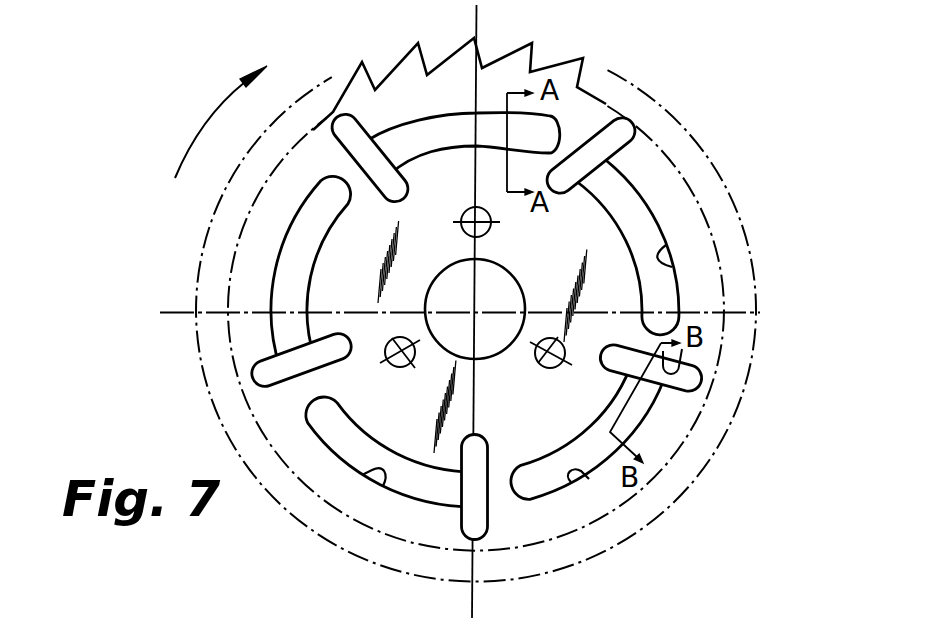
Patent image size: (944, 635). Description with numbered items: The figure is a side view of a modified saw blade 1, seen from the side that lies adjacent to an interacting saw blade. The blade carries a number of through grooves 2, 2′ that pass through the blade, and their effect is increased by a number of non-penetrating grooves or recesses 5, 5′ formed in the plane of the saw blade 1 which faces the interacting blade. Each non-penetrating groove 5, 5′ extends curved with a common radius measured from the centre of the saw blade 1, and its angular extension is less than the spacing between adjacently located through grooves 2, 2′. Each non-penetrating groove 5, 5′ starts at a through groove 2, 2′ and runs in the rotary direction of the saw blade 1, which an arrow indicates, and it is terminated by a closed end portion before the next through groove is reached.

The saw blade 1 is at (310, 458).
The through groove 2 is at (630, 141).
The through groove 2′ is at (688, 366).
The non-penetrating groove 5 is at (673, 267).
The non-penetrating groove 5′ is at (573, 472).